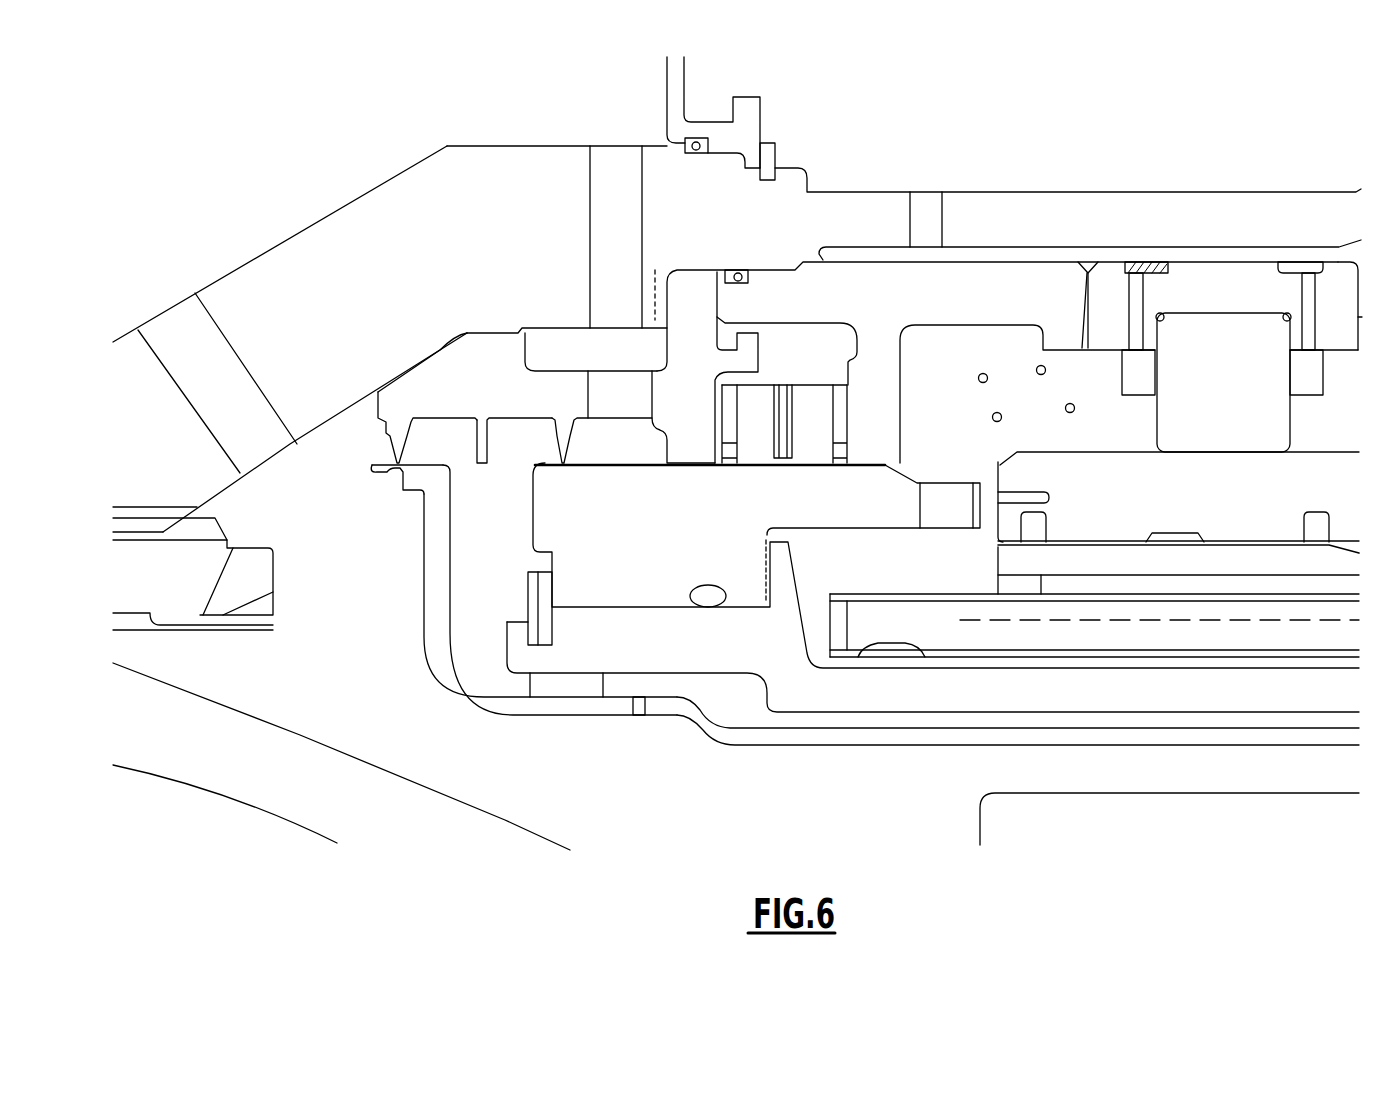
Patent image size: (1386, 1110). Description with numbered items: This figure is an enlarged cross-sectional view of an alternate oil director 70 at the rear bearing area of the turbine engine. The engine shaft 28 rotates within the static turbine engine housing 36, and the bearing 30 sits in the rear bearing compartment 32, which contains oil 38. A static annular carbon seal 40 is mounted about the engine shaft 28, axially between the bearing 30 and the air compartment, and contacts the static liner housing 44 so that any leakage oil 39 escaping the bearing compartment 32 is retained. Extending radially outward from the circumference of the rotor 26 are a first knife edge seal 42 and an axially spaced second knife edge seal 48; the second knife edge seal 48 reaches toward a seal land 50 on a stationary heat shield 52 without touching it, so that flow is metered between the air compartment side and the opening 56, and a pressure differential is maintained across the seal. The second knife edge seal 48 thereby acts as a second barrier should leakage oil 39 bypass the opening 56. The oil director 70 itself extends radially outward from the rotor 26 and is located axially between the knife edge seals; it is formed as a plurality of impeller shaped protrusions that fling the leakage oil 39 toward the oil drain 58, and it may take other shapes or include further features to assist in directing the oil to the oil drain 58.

The rotor 26 is at (398, 296).
The engine shaft 28 is at (1080, 177).
The bearing 30 is at (1243, 392).
The rear bearing compartment 32 is at (1321, 437).
The turbine engine housing 36 is at (1148, 452).
The oil 38 is at (1371, 413).
The leakage oil 39 is at (1072, 413).
The carbon seal 40 is at (758, 455).
The first knife edge seal 42 is at (562, 427).
The static liner housing 44 is at (618, 468).
The second knife edge seal 48 is at (397, 448).
The seal land 50 is at (378, 472).
The heat shield 52 is at (724, 732).
The opening 56 is at (508, 527).
The oil drain 58 is at (633, 690).
The oil director 70 is at (482, 420).